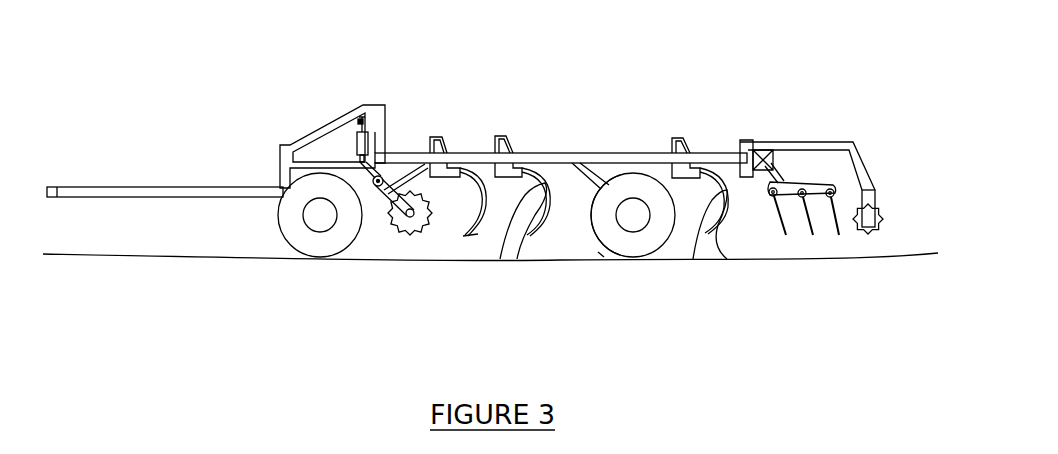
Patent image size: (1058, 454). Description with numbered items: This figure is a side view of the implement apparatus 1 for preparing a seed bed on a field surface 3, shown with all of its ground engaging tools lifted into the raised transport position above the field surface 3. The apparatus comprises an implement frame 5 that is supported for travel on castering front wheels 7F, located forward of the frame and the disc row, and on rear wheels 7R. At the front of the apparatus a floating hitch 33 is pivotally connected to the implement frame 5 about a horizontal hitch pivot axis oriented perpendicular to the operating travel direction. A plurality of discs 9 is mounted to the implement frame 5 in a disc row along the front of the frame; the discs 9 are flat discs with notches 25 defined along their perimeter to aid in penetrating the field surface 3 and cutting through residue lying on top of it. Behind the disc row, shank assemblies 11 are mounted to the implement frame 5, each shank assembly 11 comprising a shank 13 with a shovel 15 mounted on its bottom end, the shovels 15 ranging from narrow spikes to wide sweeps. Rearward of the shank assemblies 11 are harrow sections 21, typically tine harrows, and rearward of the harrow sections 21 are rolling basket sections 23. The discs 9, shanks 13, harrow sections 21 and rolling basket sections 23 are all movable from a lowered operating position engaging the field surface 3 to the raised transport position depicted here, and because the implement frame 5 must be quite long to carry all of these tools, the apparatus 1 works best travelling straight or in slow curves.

The implement apparatus 1 is at (488, 101).
The field surface 3 is at (112, 255).
The implement frame 5 is at (526, 131).
The castering front wheels 7F is at (287, 248).
The rear wheels 7R is at (603, 253).
The discs 9 is at (390, 220).
The shank assemblies 11 is at (512, 153).
The shank 13 is at (508, 232).
The shovel 15 is at (522, 240).
The harrow sections 21 is at (818, 182).
The rolling basket sections 23 is at (880, 210).
The notches 25 is at (402, 234).
The floating hitch 33 is at (128, 186).